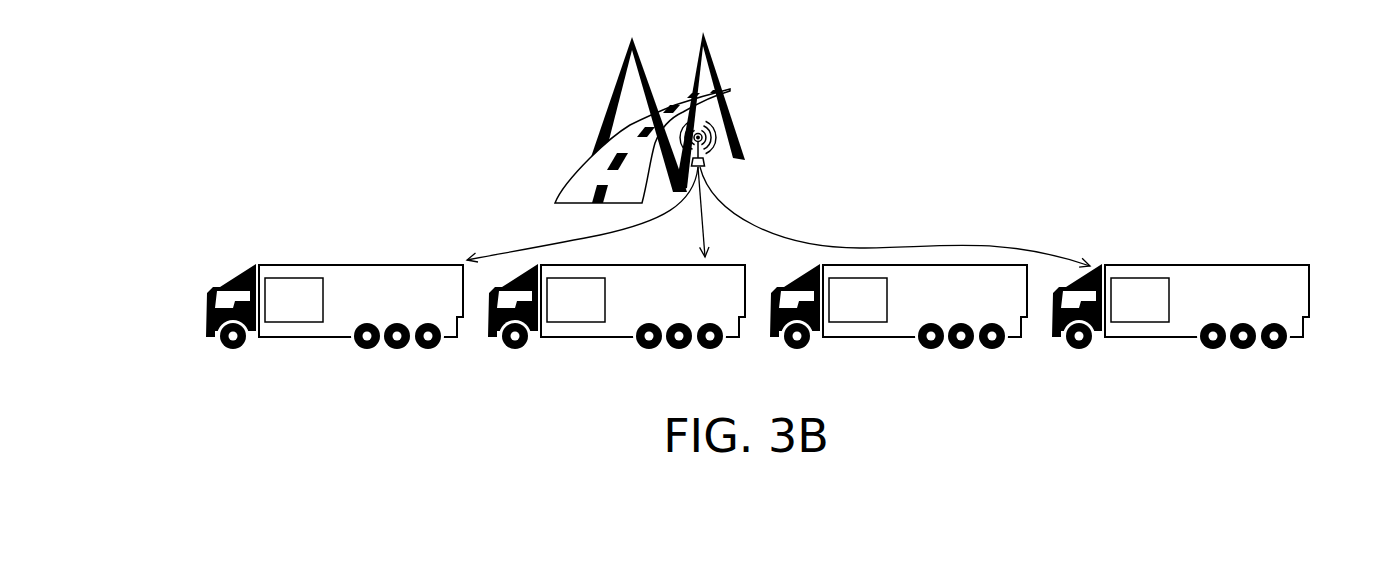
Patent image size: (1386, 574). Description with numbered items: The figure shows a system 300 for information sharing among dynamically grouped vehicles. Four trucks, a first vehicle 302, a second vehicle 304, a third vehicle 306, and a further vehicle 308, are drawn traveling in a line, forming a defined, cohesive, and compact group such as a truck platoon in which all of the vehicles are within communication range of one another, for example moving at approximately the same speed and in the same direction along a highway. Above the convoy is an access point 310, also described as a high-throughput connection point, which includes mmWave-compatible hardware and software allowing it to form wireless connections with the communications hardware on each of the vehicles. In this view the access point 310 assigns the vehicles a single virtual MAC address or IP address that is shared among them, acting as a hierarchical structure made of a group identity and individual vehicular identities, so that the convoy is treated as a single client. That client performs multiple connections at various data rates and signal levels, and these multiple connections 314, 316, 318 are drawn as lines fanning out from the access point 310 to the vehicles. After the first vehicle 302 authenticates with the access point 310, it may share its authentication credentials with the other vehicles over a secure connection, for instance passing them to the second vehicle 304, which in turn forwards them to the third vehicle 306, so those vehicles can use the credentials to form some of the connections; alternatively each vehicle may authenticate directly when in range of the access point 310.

The system 300 is at (1295, 88).
The first vehicle 302 is at (275, 313).
The second vehicle 304 is at (557, 313).
The third vehicle 306 is at (839, 313).
The vehicle 308 is at (1121, 313).
The access point 310 is at (710, 165).
The connection 314 is at (510, 238).
The connection 316 is at (707, 235).
The connection 318 is at (1018, 236).